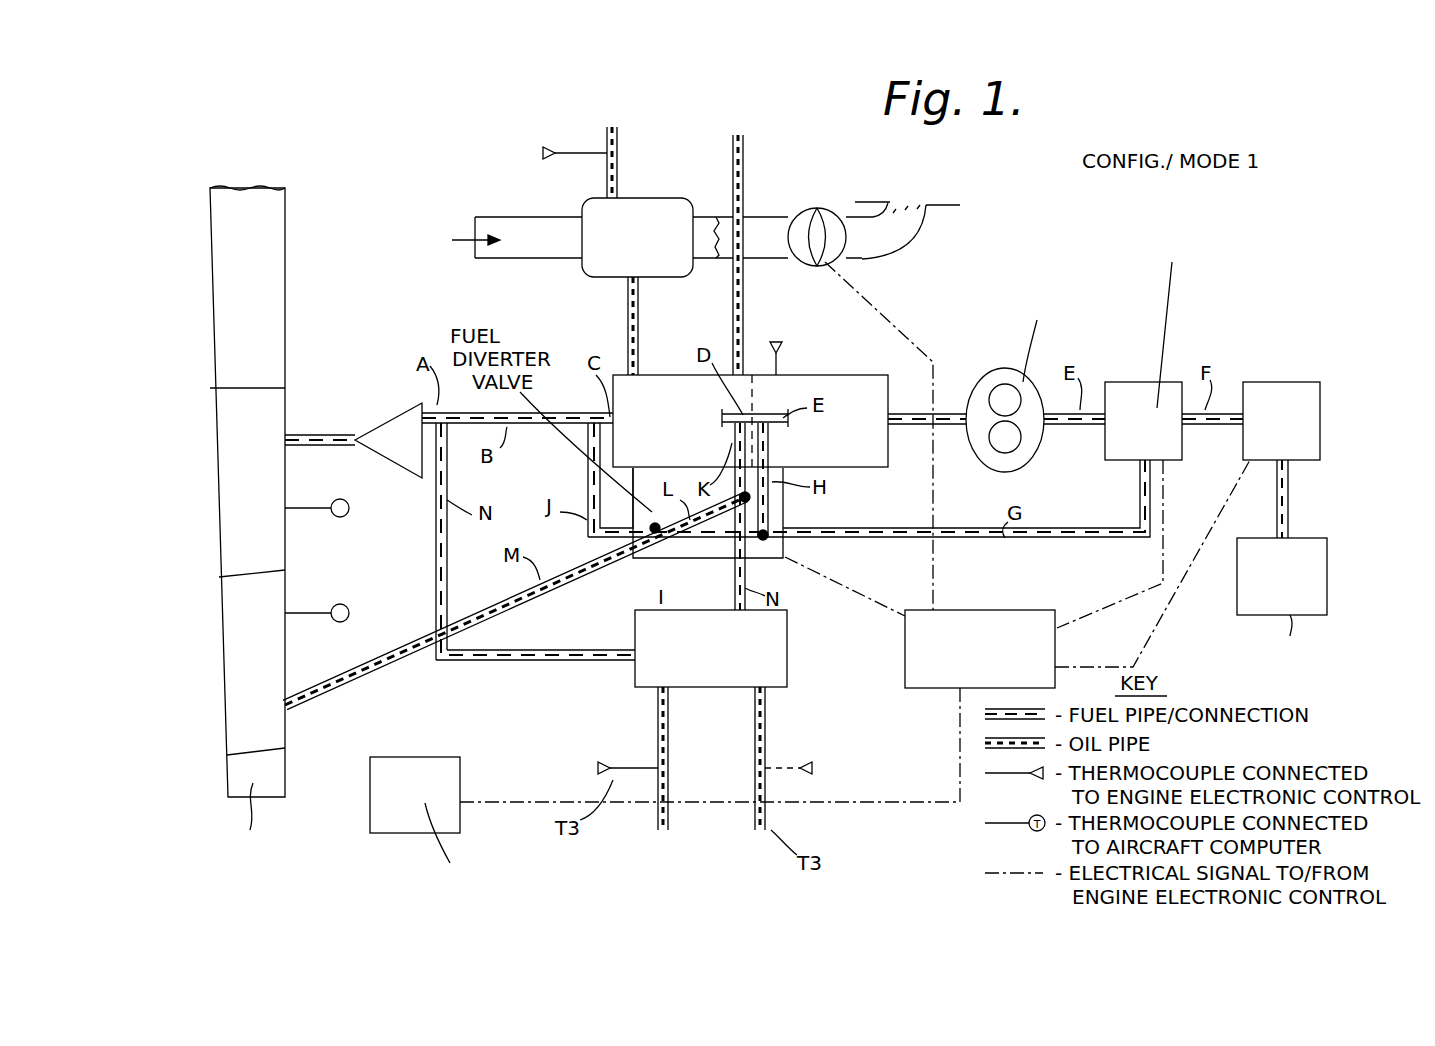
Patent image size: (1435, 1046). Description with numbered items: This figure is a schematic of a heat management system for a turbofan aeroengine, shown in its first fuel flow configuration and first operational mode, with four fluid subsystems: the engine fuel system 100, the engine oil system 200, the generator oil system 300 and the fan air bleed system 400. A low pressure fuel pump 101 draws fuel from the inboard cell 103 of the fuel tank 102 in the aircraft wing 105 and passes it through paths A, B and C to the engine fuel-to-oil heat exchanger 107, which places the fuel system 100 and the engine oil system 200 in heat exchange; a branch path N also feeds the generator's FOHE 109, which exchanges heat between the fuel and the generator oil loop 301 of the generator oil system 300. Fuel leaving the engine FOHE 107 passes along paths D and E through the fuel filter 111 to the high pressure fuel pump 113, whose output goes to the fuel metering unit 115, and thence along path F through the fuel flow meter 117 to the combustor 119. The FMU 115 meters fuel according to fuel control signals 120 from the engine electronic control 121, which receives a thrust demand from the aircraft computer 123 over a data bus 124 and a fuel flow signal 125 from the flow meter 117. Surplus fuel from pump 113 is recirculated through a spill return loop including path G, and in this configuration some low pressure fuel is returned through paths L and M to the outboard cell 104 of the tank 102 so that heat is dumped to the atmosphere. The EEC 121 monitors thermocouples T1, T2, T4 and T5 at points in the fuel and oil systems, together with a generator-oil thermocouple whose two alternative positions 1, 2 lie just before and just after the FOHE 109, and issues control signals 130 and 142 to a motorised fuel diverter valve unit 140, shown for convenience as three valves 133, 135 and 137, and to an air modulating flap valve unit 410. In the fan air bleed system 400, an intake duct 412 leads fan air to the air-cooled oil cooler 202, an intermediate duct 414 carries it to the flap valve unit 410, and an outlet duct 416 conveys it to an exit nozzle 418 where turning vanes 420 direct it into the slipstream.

The fuel system 100 is at (388, 366).
The low pressure fuel pump 101 is at (397, 447).
The fuel tank 102 is at (220, 621).
The inboard cell 103 is at (285, 466).
The outboard cell 104 is at (228, 598).
The aircraft wing 105 is at (290, 310).
The engine fuel-to-oil heat exchanger (FOHE) 107 is at (628, 393).
The generator fuel-to-oil heat exchanger (FOHE) 109 is at (770, 657).
The fuel filter 111 is at (860, 397).
The high pressure fuel pump 113 is at (1008, 377).
The fuel metering unit (FMU) 115 is at (1142, 390).
The fuel flow meter 117 is at (1275, 382).
The combustor 119 is at (1310, 563).
The fuel control signals 120 is at (1124, 598).
The engine electronic control (EEC) 121 is at (930, 688).
The aircraft computer 123 is at (398, 823).
The data bus 124 is at (917, 800).
The fuel flow signal 125 is at (1167, 618).
The control signal 130 is at (852, 600).
The valve 133 is at (653, 558).
The valve 135 is at (680, 558).
The valve 137 is at (767, 557).
The fuel diverter valve unit 140 is at (785, 508).
The control signal 142 is at (935, 560).
The engine oil system 200 is at (607, 176).
The air-cooled oil cooler (ACOC) 202 is at (667, 278).
The generator oil system 300 is at (768, 835).
The heat exchange loop 301 is at (660, 715).
The fan air bleed system 400 is at (763, 261).
The air modulating flap valve unit 410 is at (828, 262).
The intake duct 412 is at (493, 260).
The intermediate duct 414 is at (712, 226).
The outlet duct 416 is at (907, 247).
The exit nozzle 418 is at (907, 203).
The turning vanes 420 is at (925, 210).
The thermocouple on generator oil supply pipe 1 is at (622, 760).
The thermocouple on generator oil return pipe 2 is at (797, 760).
The thermocouple T1 is at (790, 352).
The thermocouple T2 is at (565, 152).
The thermocouple T4 is at (312, 513).
The thermocouple T5 is at (323, 610).